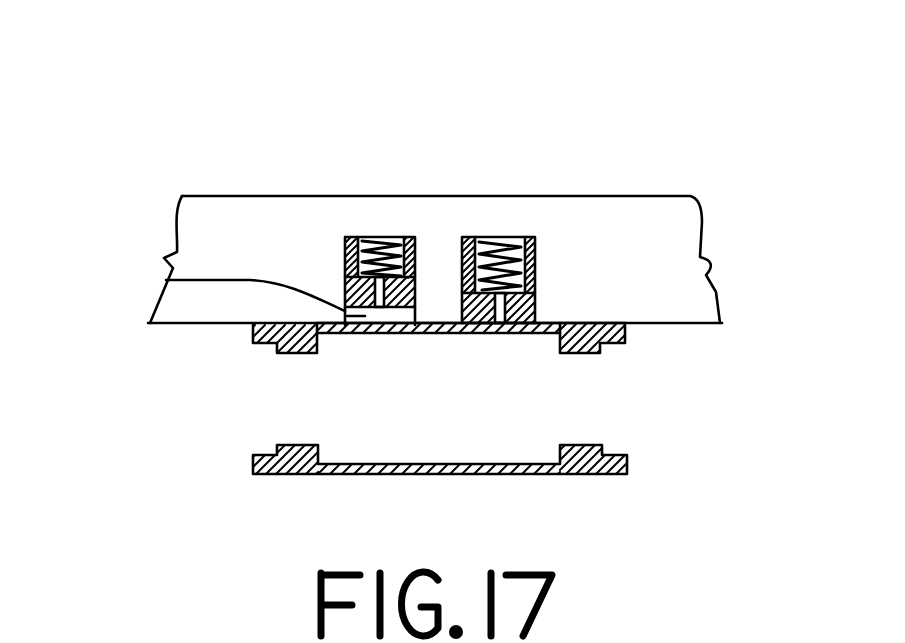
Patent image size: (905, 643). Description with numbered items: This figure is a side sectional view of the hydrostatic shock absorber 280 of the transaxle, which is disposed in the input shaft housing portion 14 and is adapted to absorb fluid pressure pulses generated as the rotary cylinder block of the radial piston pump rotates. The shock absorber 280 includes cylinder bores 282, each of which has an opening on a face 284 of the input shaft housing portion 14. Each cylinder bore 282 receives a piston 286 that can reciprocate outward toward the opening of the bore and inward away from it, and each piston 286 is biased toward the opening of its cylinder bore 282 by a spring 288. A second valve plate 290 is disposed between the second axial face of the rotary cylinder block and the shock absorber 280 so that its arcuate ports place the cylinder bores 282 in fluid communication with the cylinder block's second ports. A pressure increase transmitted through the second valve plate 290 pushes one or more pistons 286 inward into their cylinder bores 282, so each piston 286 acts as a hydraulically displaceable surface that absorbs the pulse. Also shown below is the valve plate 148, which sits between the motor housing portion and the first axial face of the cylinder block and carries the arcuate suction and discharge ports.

The input shaft housing portion 14 is at (232, 220).
The shock absorber 280 is at (668, 132).
The cylinder bores 282 is at (170, 282).
The face 284 is at (668, 326).
The piston 286 is at (347, 279).
The spring 288 is at (392, 237).
The second valve plate 290 is at (291, 353).
The valve plate 148 is at (583, 476).